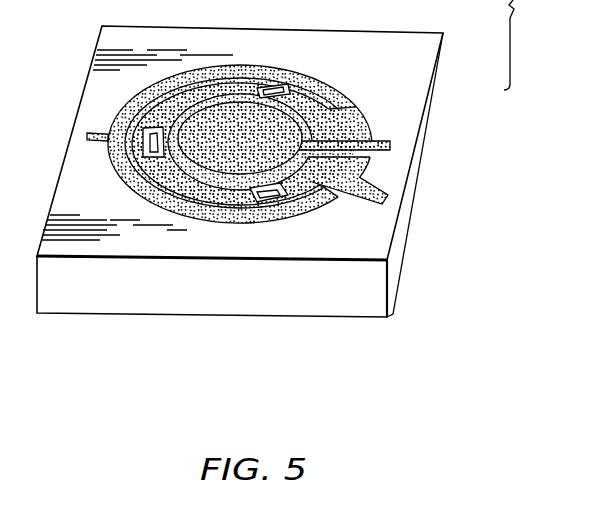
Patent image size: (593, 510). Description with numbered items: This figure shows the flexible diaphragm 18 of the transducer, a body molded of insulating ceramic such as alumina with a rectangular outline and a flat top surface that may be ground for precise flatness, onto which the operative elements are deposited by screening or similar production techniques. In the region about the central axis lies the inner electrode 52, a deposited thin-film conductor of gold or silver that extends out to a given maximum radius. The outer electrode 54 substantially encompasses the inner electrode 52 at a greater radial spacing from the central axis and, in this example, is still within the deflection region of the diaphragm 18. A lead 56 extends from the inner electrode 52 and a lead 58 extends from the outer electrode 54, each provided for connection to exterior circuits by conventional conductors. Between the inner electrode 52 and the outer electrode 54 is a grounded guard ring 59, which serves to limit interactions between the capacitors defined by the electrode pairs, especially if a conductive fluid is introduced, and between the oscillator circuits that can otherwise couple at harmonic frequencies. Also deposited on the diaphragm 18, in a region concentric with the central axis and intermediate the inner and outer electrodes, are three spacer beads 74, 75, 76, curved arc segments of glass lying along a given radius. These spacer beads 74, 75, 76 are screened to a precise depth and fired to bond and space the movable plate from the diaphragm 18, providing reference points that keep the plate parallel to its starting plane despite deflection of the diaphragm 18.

The flexible diaphragm 18 is at (397, 66).
The inner electrode 52 is at (192, 117).
The outer electrode 54 is at (335, 100).
The lead 56 is at (387, 151).
The lead 58 is at (87, 132).
The grounded guard ring 59 is at (236, 196).
The spacer bead 74 is at (153, 150).
The spacer bead 75 is at (290, 85).
The spacer bead 76 is at (293, 198).